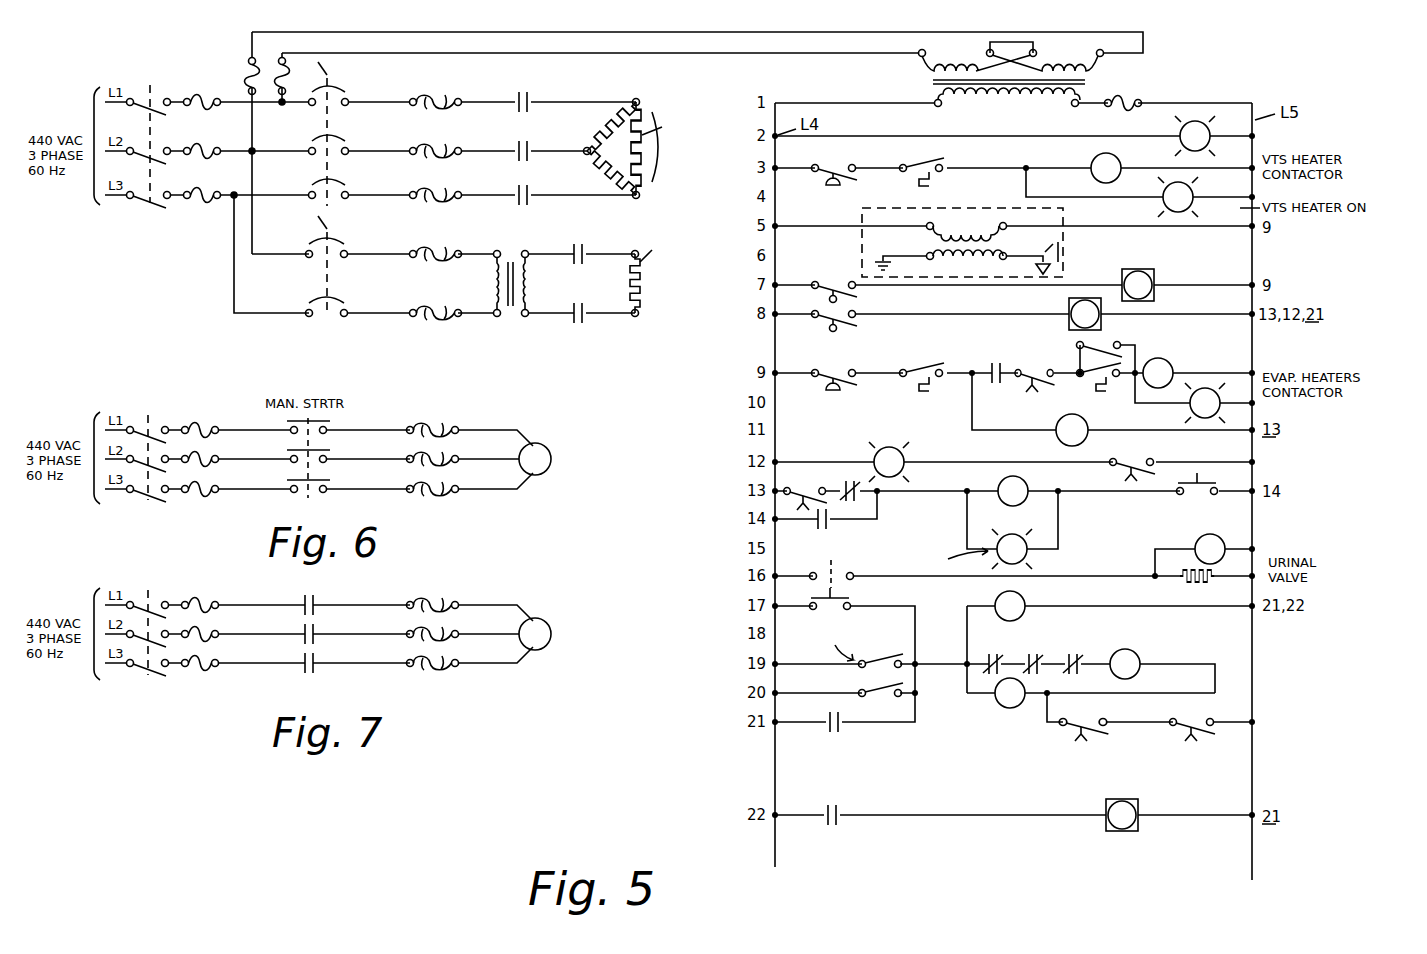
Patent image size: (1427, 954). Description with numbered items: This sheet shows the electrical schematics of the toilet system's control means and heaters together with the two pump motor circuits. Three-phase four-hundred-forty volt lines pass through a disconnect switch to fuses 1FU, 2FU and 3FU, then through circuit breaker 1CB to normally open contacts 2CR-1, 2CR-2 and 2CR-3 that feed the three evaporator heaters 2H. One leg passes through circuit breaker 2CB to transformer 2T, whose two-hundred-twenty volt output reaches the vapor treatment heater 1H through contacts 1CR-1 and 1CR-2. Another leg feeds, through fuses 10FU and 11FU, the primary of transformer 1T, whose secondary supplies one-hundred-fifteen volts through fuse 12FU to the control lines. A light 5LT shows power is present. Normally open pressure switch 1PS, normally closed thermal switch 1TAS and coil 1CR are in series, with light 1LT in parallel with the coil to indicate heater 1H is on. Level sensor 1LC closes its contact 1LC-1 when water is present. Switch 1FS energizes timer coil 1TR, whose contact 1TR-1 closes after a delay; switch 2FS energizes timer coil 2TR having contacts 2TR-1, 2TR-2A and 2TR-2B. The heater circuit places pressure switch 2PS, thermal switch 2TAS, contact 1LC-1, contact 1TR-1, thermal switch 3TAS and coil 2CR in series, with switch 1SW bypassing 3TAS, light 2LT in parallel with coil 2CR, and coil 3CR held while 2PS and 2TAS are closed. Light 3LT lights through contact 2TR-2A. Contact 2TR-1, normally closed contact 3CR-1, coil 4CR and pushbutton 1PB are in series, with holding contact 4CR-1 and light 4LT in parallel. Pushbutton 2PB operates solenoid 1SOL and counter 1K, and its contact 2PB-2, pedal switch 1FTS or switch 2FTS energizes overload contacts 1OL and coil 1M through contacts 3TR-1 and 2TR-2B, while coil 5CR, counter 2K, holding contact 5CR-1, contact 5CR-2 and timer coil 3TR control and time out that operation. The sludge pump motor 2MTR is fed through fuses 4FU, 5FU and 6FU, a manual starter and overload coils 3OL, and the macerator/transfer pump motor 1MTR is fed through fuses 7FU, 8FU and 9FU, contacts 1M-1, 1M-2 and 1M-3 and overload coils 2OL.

In FIG. 5, the fuse 1FU is at (202, 95).
In FIG. 5, the fuse 2FU is at (202, 144).
In FIG. 5, the fuse 3FU is at (202, 188).
In FIG. 5, the fuse 10FU is at (232, 143).
In FIG. 5, the fuse 11FU is at (299, 76).
In FIG. 5, the fuse 12FU is at (1122, 96).
In FIG. 5, the circuit breaker 1CB is at (335, 133).
In FIG. 5, the circuit breaker 2CB is at (334, 266).
In FIG. 5, the normally open contact 2CR-1 is at (524, 94).
In FIG. 5, the normally open contact 2CR-2 is at (524, 143).
In FIG. 5, the normally open contact 2CR-3 is at (524, 187).
In FIG. 5, the heaters 2H is at (632, 133).
In FIG. 5, the transformer 2T is at (507, 273).
In FIG. 5, the normally open contact 1CR-1 is at (579, 246).
In FIG. 5, the normally open contact 1CR-2 is at (577, 321).
In FIG. 5, the heater 1H is at (620, 307).
In FIG. 5, the transformer 1T is at (926, 84).
In FIG. 5, the light 5LT is at (1172, 136).
In FIG. 5, the pressure switch 1PS is at (819, 177).
In FIG. 5, the thermal switch 1TAS is at (935, 175).
In FIG. 5, the coil 1CR is at (1106, 168).
In FIG. 5, the light 1LT is at (1190, 197).
In FIG. 5, the liquid level sensor 1LC is at (1027, 241).
In FIG. 5, the switch 1FS is at (876, 283).
In FIG. 5, the coil 1TR is at (1138, 285).
In FIG. 5, the switch 2FS is at (870, 324).
In FIG. 5, the coil 2TR is at (1085, 314).
In FIG. 5, the pressure switch 2PS is at (833, 369).
In FIG. 5, the thermal switch 2TAS is at (919, 369).
In FIG. 5, the normally open contact 1LC-1 is at (994, 365).
In FIG. 5, the normally open time-closing contact 1TR-1 is at (1033, 362).
In FIG. 5, the switch 1SW is at (1093, 342).
In FIG. 5, the thermal switch 3TAS is at (1099, 390).
In FIG. 5, the coil 2CR is at (1158, 373).
In FIG. 5, the light 2LT is at (1187, 403).
In FIG. 5, the coil 3CR is at (1072, 430).
In FIG. 5, the light 3LT is at (898, 448).
In FIG. 5, the normally open time-closing contact 2TR-2A is at (1126, 458).
In FIG. 5, the normally open time-closing contact 2TR-1 is at (801, 489).
In FIG. 5, the normally closed contact 3CR-1 is at (847, 484).
In FIG. 5, the coil 4CR is at (1013, 491).
In FIG. 5, the pushbutton switch 1PB is at (1197, 480).
In FIG. 5, the normally open contact 4CR-1 is at (842, 525).
In FIG. 5, the light 4LT is at (972, 549).
In FIG. 5, the pushbutton switch 2PB is at (888, 528).
In FIG. 5, the normally open contact 2PB-2 is at (842, 602).
In FIG. 5, the counter 1K is at (1203, 549).
In FIG. 5, the solenoid 1SOL is at (1202, 586).
In FIG. 5, the coil 5CR is at (1010, 606).
In FIG. 5, the pedal-operated switch 1FTS is at (854, 649).
In FIG. 5, the thermal overload contacts 1OL is at (1063, 645).
In FIG. 5, the coil 1M is at (1125, 664).
In FIG. 5, the switch 2FTS is at (879, 699).
In FIG. 5, the counter 2K is at (1010, 693).
In FIG. 5, the normally closed time-opening contact 3TR-1 is at (1081, 719).
In FIG. 5, the normally closed time-opening contact 2TR-2B is at (1187, 719).
In FIG. 5, the normally open contact 5CR-1 is at (827, 731).
In FIG. 5, the normally open contact 5CR-2 is at (827, 808).
In FIG. 5, the coil 3TR is at (1122, 815).
In FIG. 6, the fuse 4FU is at (200, 423).
In FIG. 6, the fuse 5FU is at (200, 452).
In FIG. 6, the fuse 6FU is at (200, 482).
In FIG. 6, the thermal overload coils 3OL is at (433, 451).
In FIG. 6, the motor 2MTR is at (564, 467).
In FIG. 7, the fuse 7FU is at (200, 598).
In FIG. 7, the fuse 8FU is at (200, 627).
In FIG. 7, the fuse 9FU is at (200, 656).
In FIG. 7, the normally open contact 1M-1 is at (304, 598).
In FIG. 7, the normally open contact 1M-2 is at (304, 627).
In FIG. 7, the normally open contact 1M-3 is at (304, 656).
In FIG. 7, the thermal overload coils 2OL is at (433, 625).
In FIG. 7, the motor 1MTR is at (560, 640).